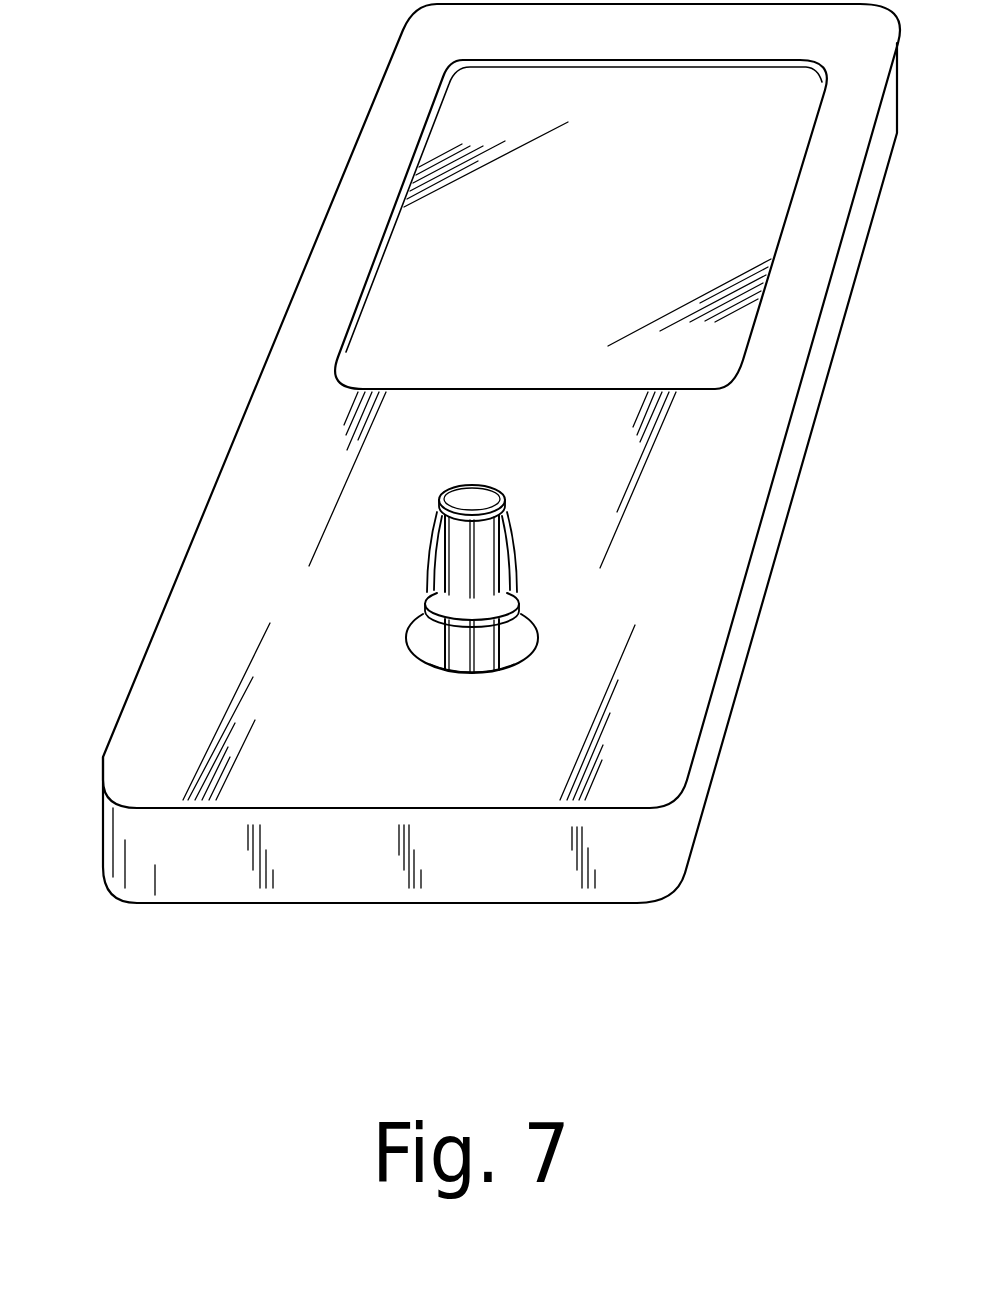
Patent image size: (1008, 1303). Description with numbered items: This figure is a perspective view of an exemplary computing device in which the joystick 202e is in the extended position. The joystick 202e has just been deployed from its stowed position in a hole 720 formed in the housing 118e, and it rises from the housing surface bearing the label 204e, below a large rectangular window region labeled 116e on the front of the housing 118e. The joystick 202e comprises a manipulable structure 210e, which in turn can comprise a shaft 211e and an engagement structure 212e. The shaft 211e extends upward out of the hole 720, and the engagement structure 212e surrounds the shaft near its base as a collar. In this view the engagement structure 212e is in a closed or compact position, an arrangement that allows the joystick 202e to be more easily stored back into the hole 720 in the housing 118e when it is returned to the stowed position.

The housing 118e is at (176, 559).
The display window 116e is at (610, 258).
The top surface 204e is at (490, 774).
The joystick 202e is at (415, 688).
The manipulable structure 210e is at (484, 476).
The engagement structure 212e is at (513, 598).
The shaft 211e is at (502, 628).
The hole 720 is at (458, 672).